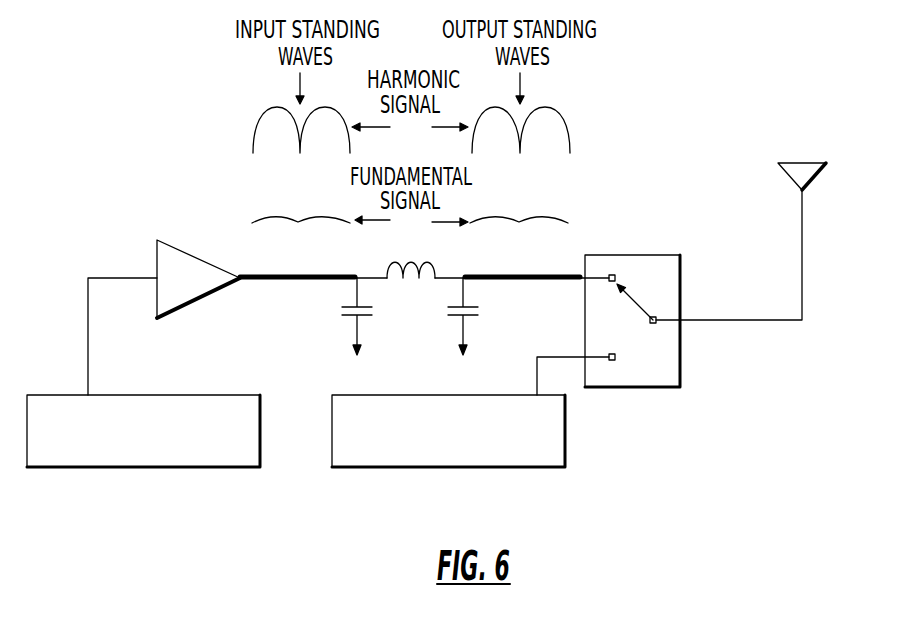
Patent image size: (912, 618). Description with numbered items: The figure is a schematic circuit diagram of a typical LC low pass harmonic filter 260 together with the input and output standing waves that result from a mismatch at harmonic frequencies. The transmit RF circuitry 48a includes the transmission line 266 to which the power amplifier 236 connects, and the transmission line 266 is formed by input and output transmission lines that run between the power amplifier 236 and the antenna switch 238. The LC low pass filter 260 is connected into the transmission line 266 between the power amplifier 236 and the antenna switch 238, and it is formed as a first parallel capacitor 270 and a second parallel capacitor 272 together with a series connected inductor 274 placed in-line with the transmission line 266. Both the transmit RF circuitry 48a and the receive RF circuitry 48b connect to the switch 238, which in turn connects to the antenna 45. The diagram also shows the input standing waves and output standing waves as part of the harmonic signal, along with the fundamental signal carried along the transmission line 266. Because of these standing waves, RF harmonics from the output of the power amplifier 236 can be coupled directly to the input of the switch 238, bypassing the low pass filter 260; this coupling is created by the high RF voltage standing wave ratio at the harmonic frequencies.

The power amplifier 236 is at (181, 249).
The transmission line 266 is at (285, 282).
The LC low pass filter 260 is at (401, 303).
The series connected inductor 274 is at (392, 263).
The first parallel capacitor 270 is at (343, 318).
The second parallel capacitor 272 is at (472, 323).
The antenna switch 238 is at (680, 255).
The antenna 45 is at (813, 178).
The transmit RF circuitry 48a is at (90, 467).
The receive RF circuitry 48b is at (392, 467).